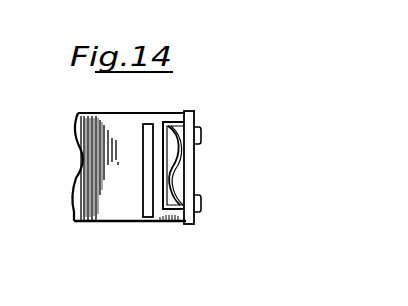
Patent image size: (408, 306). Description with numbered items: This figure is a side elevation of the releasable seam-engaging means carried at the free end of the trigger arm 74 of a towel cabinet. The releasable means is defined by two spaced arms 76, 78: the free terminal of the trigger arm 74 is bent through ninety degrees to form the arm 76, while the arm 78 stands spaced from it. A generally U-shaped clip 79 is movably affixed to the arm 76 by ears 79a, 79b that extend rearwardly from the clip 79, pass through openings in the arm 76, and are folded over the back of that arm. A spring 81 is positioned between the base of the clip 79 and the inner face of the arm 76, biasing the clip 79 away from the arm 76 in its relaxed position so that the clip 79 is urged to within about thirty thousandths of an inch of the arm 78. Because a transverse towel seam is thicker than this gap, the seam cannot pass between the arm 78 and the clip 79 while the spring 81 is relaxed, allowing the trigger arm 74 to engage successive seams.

The trigger arm 74 is at (103, 176).
The arm 76 is at (192, 222).
The arm 78 is at (150, 190).
The U-shaped clip 79 is at (168, 123).
The ear 79a is at (201, 132).
The ear 79b is at (201, 207).
The spring 81 is at (172, 157).